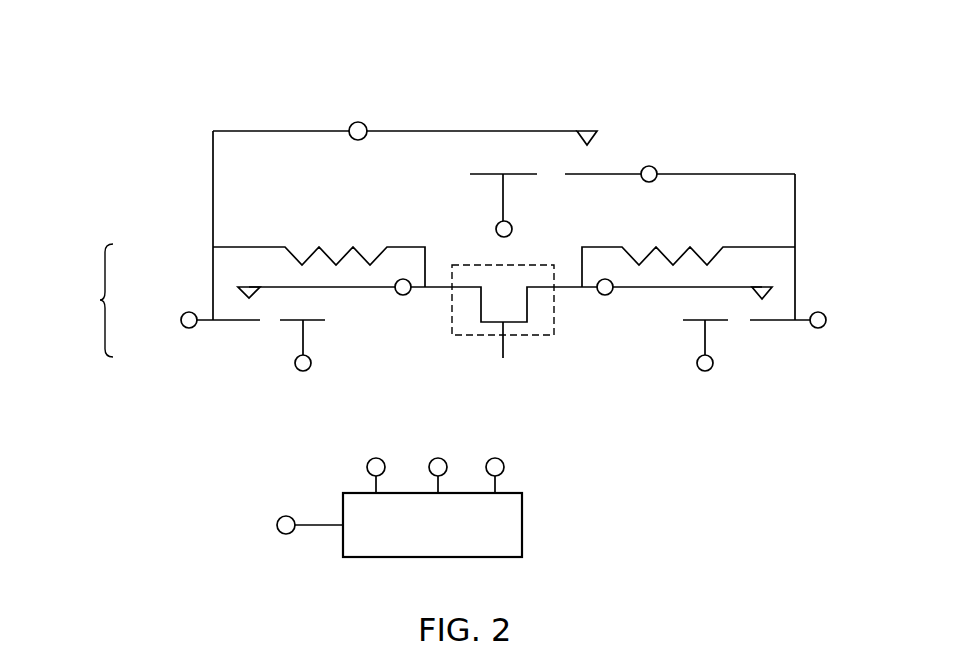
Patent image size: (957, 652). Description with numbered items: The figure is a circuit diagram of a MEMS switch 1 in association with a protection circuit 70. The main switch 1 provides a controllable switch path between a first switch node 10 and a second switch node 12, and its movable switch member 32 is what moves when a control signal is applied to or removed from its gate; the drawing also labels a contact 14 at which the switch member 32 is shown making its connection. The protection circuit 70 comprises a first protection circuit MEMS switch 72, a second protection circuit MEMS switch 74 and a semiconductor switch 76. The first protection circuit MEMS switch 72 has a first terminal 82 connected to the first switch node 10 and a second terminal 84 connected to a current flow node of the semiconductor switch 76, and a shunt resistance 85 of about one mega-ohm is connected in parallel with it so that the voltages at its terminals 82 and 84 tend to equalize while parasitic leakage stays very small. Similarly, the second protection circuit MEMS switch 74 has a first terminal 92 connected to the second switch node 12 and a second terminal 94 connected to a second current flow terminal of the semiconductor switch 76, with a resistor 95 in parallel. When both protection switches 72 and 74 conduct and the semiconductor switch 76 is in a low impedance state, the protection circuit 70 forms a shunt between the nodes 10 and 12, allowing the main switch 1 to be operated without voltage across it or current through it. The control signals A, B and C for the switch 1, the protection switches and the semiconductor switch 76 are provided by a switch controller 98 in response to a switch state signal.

The MEMS switch 1 is at (452, 77).
The switch member 32 is at (487, 131).
The switch output terminal A 14 is at (497, 224).
The shunt resistance 85 is at (360, 245).
The resistor 95 is at (695, 246).
The protection circuit 70 is at (100, 300).
The first switch node 10 is at (163, 324).
The first terminal 82 is at (243, 323).
The first protection circuit MEMS switch 72 is at (370, 318).
The second terminal 84 is at (437, 292).
The semiconductor switch 76 is at (490, 328).
The second terminal 94 is at (578, 293).
The second protection circuit MEMS switch 74 is at (625, 309).
The first terminal 92 is at (758, 323).
The second switch node 12 is at (828, 318).
The switch controller 98 is at (525, 522).